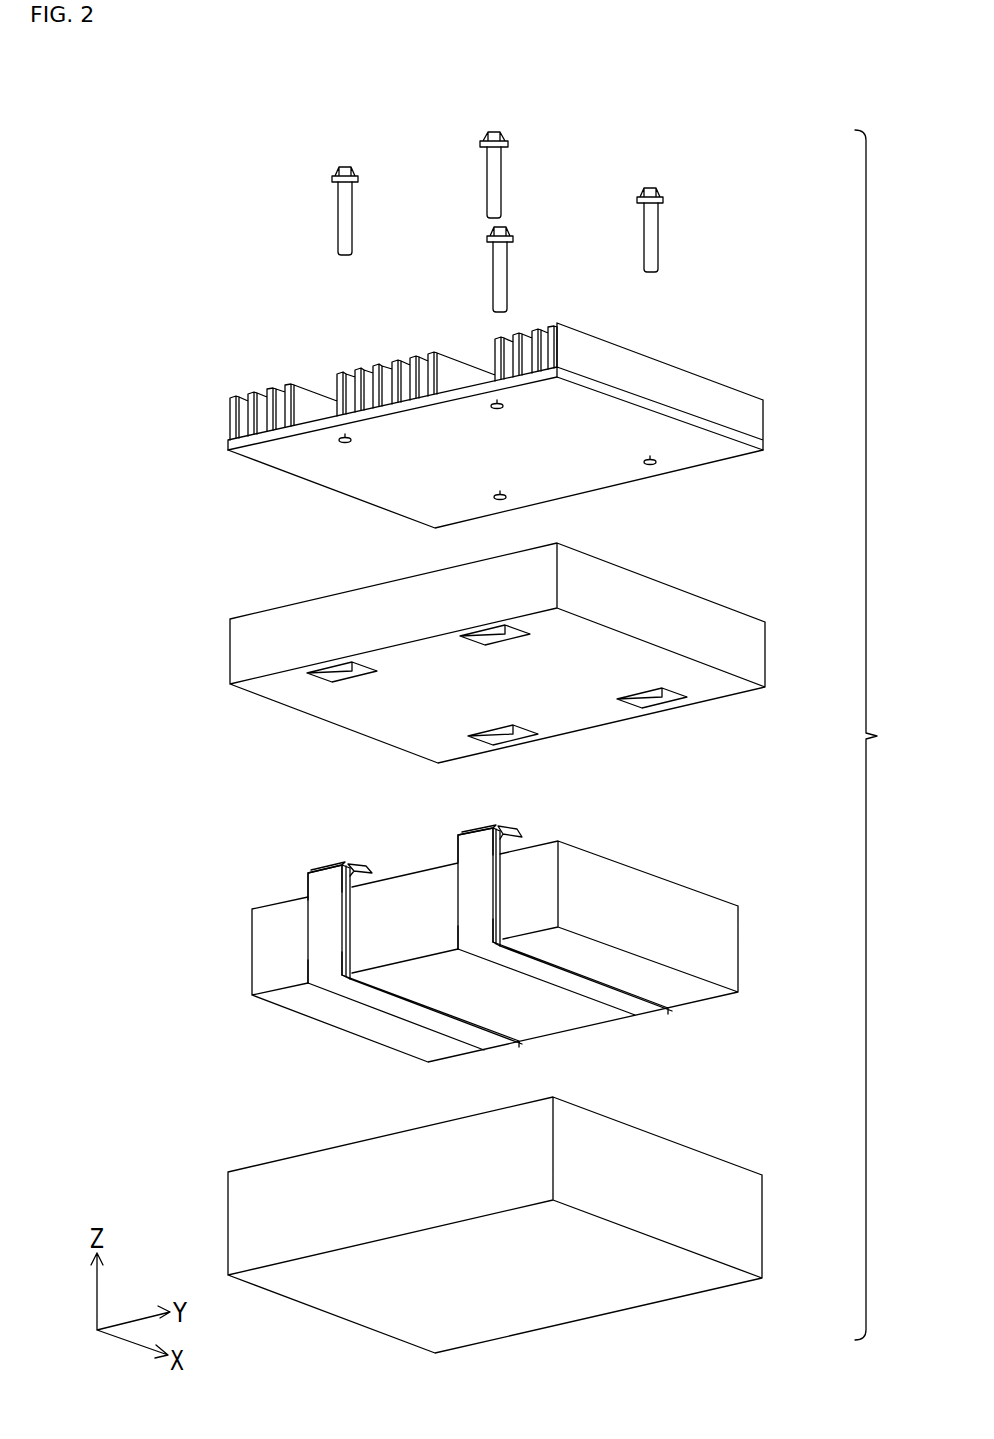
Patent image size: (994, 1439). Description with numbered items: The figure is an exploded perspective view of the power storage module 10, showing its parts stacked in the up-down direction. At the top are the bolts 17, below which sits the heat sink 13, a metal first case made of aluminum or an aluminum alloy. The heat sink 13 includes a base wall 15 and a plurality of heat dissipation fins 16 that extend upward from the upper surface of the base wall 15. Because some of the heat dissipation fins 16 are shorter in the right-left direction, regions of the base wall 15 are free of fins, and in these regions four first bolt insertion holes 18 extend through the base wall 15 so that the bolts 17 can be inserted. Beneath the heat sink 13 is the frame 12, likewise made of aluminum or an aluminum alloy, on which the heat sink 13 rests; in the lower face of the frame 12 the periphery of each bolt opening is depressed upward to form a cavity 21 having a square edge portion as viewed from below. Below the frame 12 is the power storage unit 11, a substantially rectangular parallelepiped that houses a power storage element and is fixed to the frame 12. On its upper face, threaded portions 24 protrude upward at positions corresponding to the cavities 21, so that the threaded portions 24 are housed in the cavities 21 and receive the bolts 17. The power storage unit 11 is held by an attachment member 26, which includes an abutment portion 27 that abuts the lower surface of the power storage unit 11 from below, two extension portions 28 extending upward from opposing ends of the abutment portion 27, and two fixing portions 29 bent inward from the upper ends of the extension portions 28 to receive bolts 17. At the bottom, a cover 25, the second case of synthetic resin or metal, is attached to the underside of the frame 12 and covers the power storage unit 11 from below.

The power storage module 10 is at (914, 755).
The power storage unit 11 is at (492, 948).
The frame 12 is at (526, 669).
The heat sink 13 is at (527, 432).
The base wall 15 is at (283, 451).
The heat dissipation fins 16 is at (287, 388).
The bolts 17 is at (493, 192).
The first bolt insertion holes 18 is at (500, 495).
The cavity 21 is at (482, 636).
The threaded portions 24 is at (495, 851).
The cover 25 is at (745, 1217).
The attachment member 26 is at (474, 895).
The abutment portion 27 is at (381, 1002).
The extension portions 28 is at (323, 947).
The fixing portions 29 is at (362, 866).